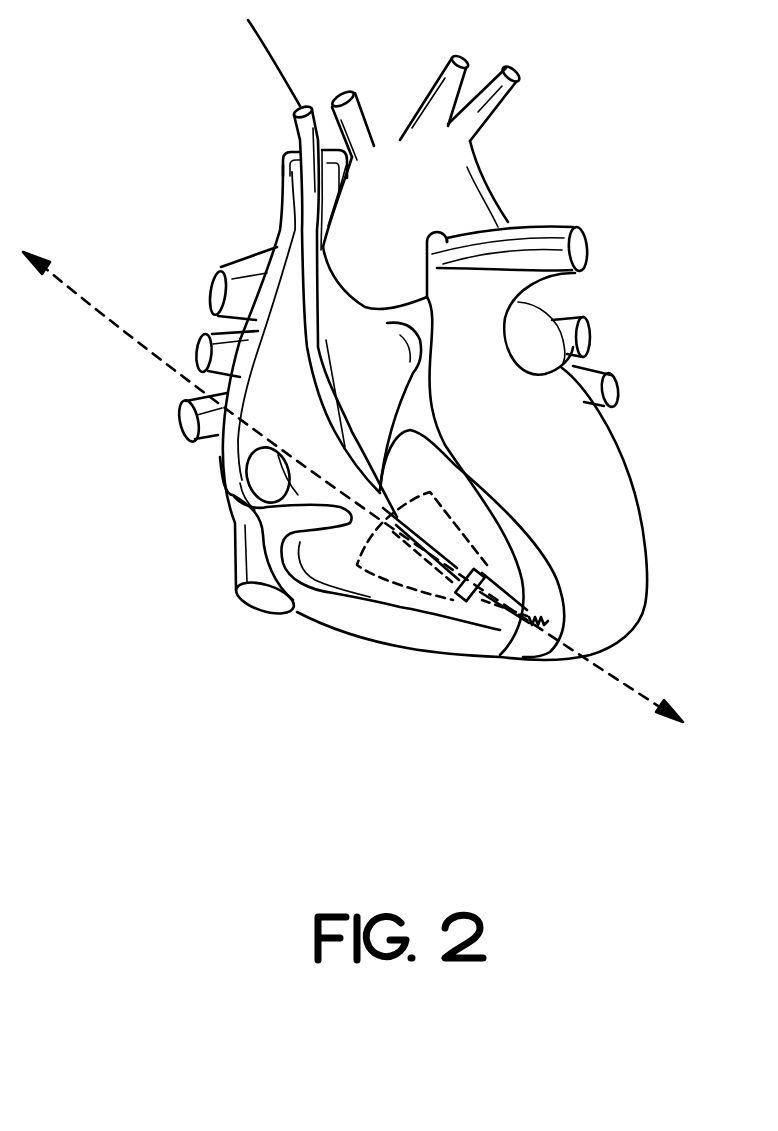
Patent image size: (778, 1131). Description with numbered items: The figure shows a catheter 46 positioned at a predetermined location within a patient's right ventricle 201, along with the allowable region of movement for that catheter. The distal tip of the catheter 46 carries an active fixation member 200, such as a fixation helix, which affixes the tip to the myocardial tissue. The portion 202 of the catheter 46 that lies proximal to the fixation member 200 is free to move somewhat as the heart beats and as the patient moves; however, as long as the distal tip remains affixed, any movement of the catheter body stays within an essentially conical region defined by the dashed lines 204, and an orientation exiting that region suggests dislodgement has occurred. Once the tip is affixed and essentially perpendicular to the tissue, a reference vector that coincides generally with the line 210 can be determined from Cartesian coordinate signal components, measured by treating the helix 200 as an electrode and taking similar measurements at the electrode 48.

The catheter 46 is at (307, 383).
The electrode 48 is at (467, 600).
The active fixation member 200 is at (545, 625).
The right ventricle 201 is at (440, 575).
The portion of catheter proximal to the fixation member 202 is at (412, 552).
The dashed lines 204 is at (458, 530).
The line 210 is at (75, 296).